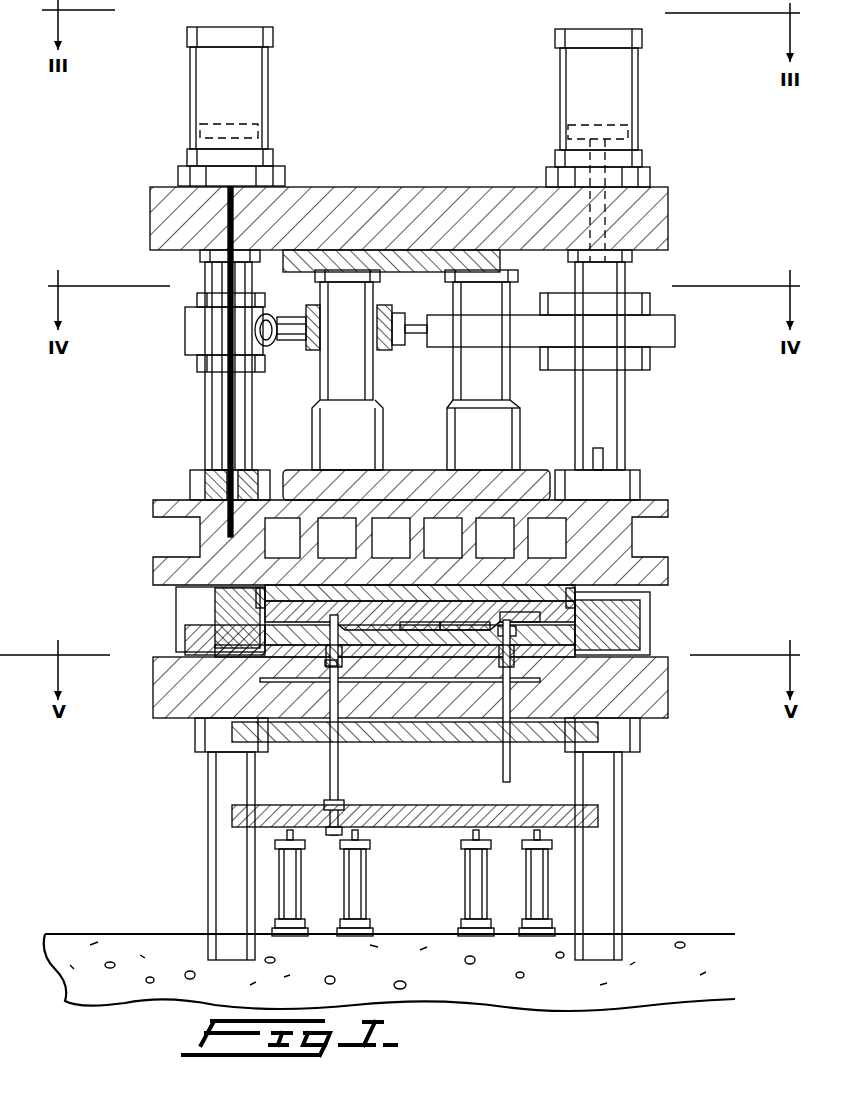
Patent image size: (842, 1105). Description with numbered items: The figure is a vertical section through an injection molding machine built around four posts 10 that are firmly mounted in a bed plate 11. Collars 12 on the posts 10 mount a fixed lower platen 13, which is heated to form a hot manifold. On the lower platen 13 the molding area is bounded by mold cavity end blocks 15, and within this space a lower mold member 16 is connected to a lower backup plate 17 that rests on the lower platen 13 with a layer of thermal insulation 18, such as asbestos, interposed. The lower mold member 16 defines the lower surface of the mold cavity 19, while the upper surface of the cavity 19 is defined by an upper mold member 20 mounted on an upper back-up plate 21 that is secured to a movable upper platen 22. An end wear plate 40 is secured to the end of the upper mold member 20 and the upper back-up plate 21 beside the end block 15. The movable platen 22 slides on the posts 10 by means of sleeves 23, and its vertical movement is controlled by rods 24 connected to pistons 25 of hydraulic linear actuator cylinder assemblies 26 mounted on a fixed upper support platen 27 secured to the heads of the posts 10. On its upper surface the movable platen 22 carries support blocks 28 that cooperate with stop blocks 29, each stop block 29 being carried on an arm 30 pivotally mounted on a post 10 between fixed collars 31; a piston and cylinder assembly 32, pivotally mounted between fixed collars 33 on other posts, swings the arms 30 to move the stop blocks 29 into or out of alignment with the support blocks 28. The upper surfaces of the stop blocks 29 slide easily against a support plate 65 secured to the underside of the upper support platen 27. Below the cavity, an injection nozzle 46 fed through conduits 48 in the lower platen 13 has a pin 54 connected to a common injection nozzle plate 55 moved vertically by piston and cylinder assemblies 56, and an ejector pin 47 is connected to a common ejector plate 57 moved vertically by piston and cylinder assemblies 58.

The posts 10 is at (215, 868).
The bed plate 11 is at (696, 938).
The collars 12 is at (200, 740).
The lower platen 13 is at (660, 714).
The mold cavity end blocks 15 is at (225, 610).
The lower mold member 16 is at (420, 622).
The lower backup plate 17 is at (215, 642).
The thermal insulation 18 is at (410, 645).
The mold cavity 19 is at (355, 610).
The upper mold member 20 is at (470, 622).
The upper back-up plate 21 is at (523, 620).
The movable upper platen 22 is at (385, 532).
The sleeves 23 is at (195, 480).
The rods 24 is at (598, 258).
The pistons 25 is at (620, 128).
The linear actuator cylinder assembly 26 is at (560, 60).
The upper support platen 27 is at (455, 200).
The support blocks 28 is at (385, 422).
The stop blocks 29 is at (376, 362).
The arm 30 is at (520, 334).
The fixed collars 31 is at (650, 327).
The piston and cylinder assembly 32 is at (297, 335).
The fixed collars 33 is at (198, 300).
The end wear plate 40 is at (265, 592).
The injection nozzle 46 is at (502, 635).
The ejector pin 47 is at (325, 665).
The conduits 48 is at (333, 665).
The pin 54 is at (510, 692).
The injection nozzle plate 55 is at (558, 740).
The piston and cylinder assemblies 56 is at (472, 868).
The ejector plate 57 is at (290, 812).
The piston and cylinder assemblies 58 is at (298, 892).
The support plate 65 is at (337, 260).